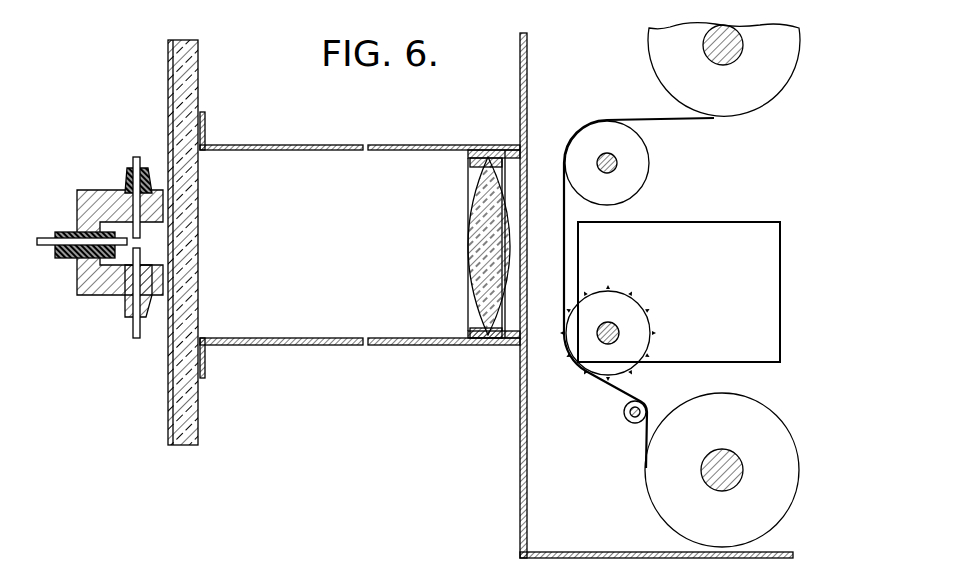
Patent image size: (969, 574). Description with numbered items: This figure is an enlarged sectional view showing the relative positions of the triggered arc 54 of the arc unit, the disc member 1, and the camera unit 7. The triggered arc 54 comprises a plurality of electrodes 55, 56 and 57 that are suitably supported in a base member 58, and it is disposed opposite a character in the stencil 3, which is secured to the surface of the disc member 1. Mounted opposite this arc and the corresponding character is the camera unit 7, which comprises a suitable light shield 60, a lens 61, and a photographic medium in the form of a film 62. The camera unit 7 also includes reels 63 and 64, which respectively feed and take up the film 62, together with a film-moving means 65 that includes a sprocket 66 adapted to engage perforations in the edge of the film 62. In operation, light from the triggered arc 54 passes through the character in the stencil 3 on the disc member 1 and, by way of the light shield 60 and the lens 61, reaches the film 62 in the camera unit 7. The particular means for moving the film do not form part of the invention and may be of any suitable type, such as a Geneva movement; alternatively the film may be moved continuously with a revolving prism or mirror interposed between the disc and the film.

The disc member 1 is at (198, 430).
The stencil 3 is at (170, 395).
The camera unit 7 is at (481, 115).
The triggered arc 54 is at (89, 128).
The electrode 55 is at (133, 160).
The electrode 56 is at (50, 247).
The electrode 57 is at (136, 325).
The base member 58 is at (97, 296).
The light shield 60 is at (296, 145).
The lens 61 is at (468, 260).
The film 62 is at (563, 218).
The reel 63 is at (663, 72).
The reel 64 is at (660, 478).
The film-moving means 65 is at (709, 230).
The sprocket 66 is at (625, 358).